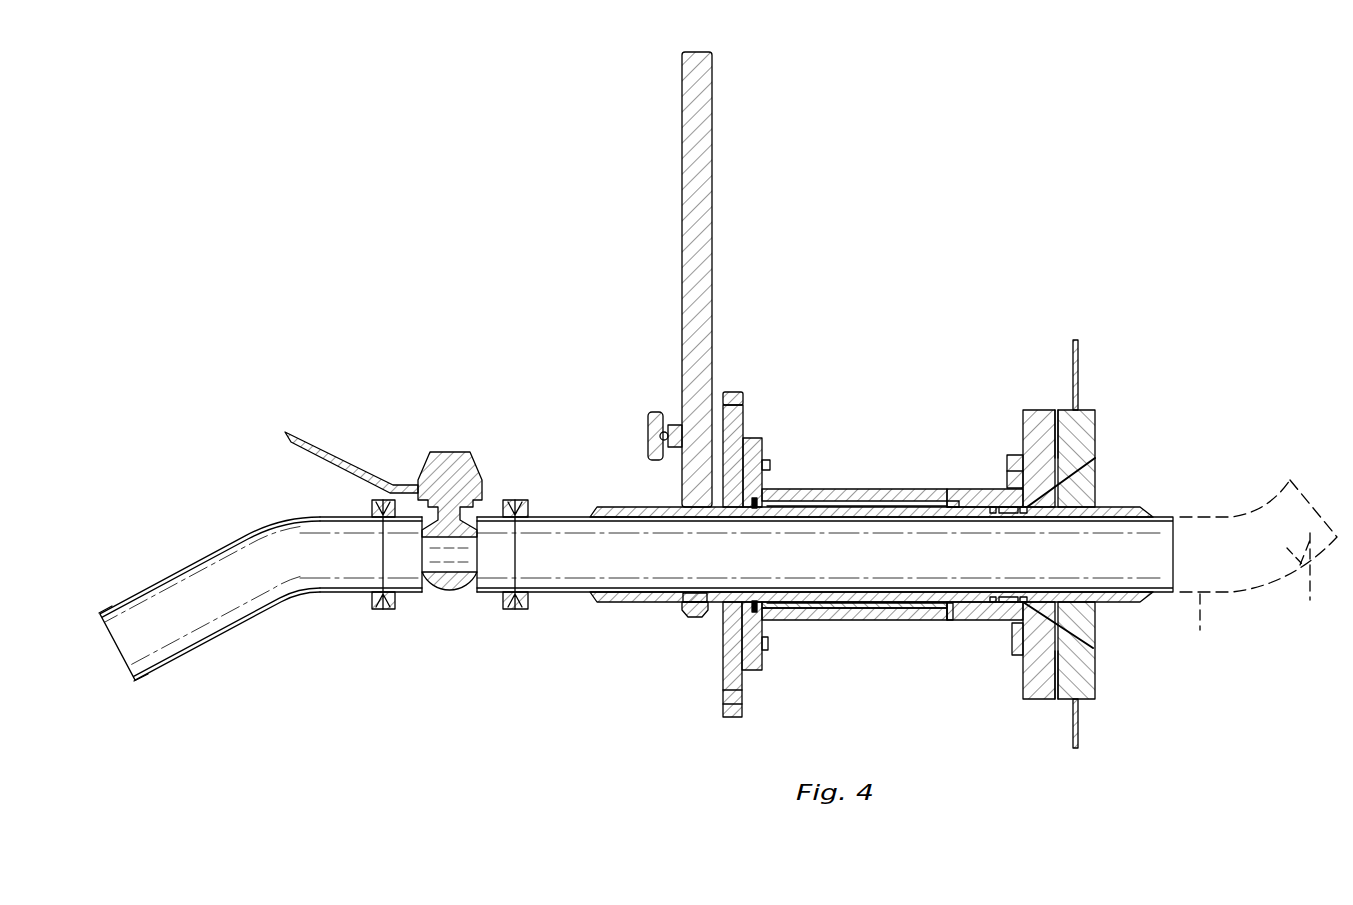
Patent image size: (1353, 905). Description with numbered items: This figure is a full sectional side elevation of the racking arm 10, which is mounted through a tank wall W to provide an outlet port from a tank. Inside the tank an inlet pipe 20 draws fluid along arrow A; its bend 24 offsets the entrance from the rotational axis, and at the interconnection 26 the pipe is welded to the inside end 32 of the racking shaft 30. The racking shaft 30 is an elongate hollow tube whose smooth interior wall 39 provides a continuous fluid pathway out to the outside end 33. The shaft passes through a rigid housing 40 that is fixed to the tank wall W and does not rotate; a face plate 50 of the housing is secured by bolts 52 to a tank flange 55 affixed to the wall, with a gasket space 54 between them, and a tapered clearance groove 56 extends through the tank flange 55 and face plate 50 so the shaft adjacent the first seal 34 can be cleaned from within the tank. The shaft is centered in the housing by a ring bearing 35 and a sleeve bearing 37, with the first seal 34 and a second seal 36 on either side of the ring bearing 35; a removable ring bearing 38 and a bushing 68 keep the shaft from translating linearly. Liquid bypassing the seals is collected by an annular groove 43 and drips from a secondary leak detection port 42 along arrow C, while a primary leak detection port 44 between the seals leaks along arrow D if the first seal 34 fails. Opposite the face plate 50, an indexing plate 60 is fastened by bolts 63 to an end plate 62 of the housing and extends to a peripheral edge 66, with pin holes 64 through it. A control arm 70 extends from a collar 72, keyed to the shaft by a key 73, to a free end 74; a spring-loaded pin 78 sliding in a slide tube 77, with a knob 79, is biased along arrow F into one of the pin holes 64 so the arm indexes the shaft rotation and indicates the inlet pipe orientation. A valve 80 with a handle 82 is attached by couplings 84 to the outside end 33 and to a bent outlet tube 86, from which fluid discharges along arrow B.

The racking arm 10 is at (960, 250).
The inlet pipe 20 is at (1311, 598).
The bend 24 is at (1284, 582).
The interconnection 26 is at (1204, 637).
The racking shaft 30 is at (628, 603).
The inside end 32 is at (1163, 542).
The outside end 33 is at (535, 580).
The first seal 34 is at (1024, 597).
The ring bearing 35 is at (1008, 597).
The second seal 36 is at (992, 597).
The sleeve bearing 37 is at (848, 608).
The ring bearing 38 is at (757, 601).
The interior wall 39 is at (735, 563).
The housing 40 is at (870, 489).
The secondary leak detection port 42 is at (957, 615).
The annular groove 43 is at (958, 489).
The primary leak detection port 44 is at (990, 612).
The face plate 50 is at (1030, 412).
The bolts 52 is at (1012, 455).
The gasket space 54 is at (1057, 410).
The tank flange 55 is at (1090, 422).
The clearance groove 56 is at (1080, 488).
The indexing plate 60 is at (752, 448).
The end plate 62 is at (760, 463).
The bolts 63 is at (775, 466).
The pin holes 64 is at (735, 415).
The peripheral edge 66 is at (732, 392).
The bushing 68 is at (723, 608).
The control arm 70 is at (700, 140).
The collar 72 is at (690, 617).
The key 73 is at (695, 593).
The free end 74 is at (690, 52).
The slide tube 77 is at (672, 425).
The pin 78 is at (668, 450).
The knob 79 is at (653, 412).
The valve 80 is at (427, 443).
The handle 82 is at (298, 425).
The couplings 84 is at (385, 610).
The outlet tube 86 is at (172, 634).
The arrow A is at (1287, 527).
The arrow B is at (143, 632).
The arrow C is at (950, 685).
The arrow D is at (1007, 607).
The arrow F is at (643, 437).
The tank wall W is at (1078, 355).